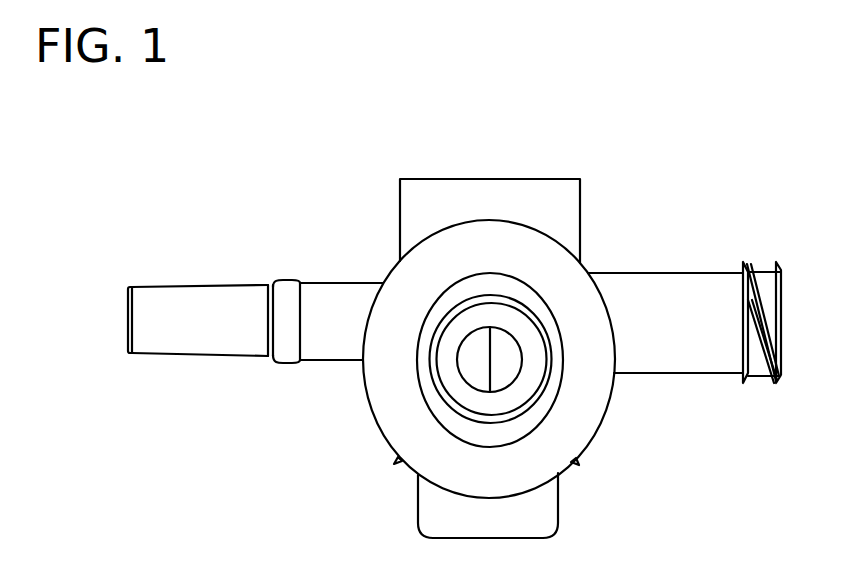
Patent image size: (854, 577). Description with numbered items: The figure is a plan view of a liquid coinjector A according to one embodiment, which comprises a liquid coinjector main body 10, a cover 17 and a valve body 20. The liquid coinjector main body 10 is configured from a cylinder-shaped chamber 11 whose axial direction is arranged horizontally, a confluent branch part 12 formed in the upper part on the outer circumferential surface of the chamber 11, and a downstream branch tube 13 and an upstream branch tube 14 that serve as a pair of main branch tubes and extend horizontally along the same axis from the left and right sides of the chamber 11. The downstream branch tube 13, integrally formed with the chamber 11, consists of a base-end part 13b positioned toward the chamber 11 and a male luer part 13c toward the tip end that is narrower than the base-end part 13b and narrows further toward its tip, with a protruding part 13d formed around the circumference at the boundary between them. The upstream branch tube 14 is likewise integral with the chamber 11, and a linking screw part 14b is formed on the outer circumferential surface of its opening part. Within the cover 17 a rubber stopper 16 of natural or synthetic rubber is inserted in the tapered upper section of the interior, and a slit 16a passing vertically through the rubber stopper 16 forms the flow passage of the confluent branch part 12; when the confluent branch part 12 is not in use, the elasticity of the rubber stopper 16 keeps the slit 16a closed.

The liquid coinjector A is at (728, 152).
The liquid coinjector main body 10 is at (621, 225).
The chamber 11 is at (447, 179).
The confluent branch part 12 is at (609, 447).
The downstream branch tube 13 is at (368, 228).
The base-end part 13b is at (337, 289).
The male luer part 13c is at (228, 289).
The protruding part 13d is at (284, 289).
The upstream branch tube 14 is at (698, 375).
The linking screw part 14b is at (762, 267).
The rubber stopper 16 is at (467, 363).
The slit 16a is at (490, 348).
The cover 17 is at (388, 419).
The valve body 20 is at (578, 514).